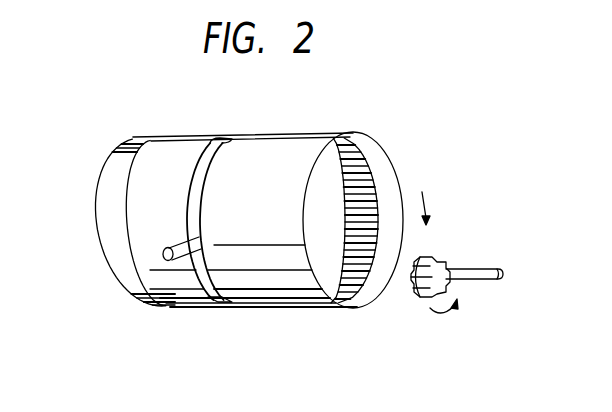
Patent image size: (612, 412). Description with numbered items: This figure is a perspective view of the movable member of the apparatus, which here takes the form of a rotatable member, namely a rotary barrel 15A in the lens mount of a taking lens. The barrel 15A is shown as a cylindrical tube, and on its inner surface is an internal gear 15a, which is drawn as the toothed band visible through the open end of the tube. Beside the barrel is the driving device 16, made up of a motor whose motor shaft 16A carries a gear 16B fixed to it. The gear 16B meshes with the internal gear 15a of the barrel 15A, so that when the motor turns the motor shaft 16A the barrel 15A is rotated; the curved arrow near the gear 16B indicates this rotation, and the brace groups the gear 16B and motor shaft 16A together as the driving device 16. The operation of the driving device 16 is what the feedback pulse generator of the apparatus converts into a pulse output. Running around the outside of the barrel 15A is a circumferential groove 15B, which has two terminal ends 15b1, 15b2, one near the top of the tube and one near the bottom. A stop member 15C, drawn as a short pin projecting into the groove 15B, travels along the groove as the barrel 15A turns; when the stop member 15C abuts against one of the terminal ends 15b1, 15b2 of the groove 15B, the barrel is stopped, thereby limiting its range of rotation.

The rotary barrel 15A is at (272, 132).
The internal gear 15a is at (368, 185).
The circumferential groove 15B is at (196, 181).
The terminal end 15b1 is at (206, 140).
The terminal end 15b2 is at (210, 301).
The stop member 15C is at (162, 256).
The driving device 16 is at (534, 200).
The motor shaft 16A is at (482, 273).
The gear 16B is at (433, 258).